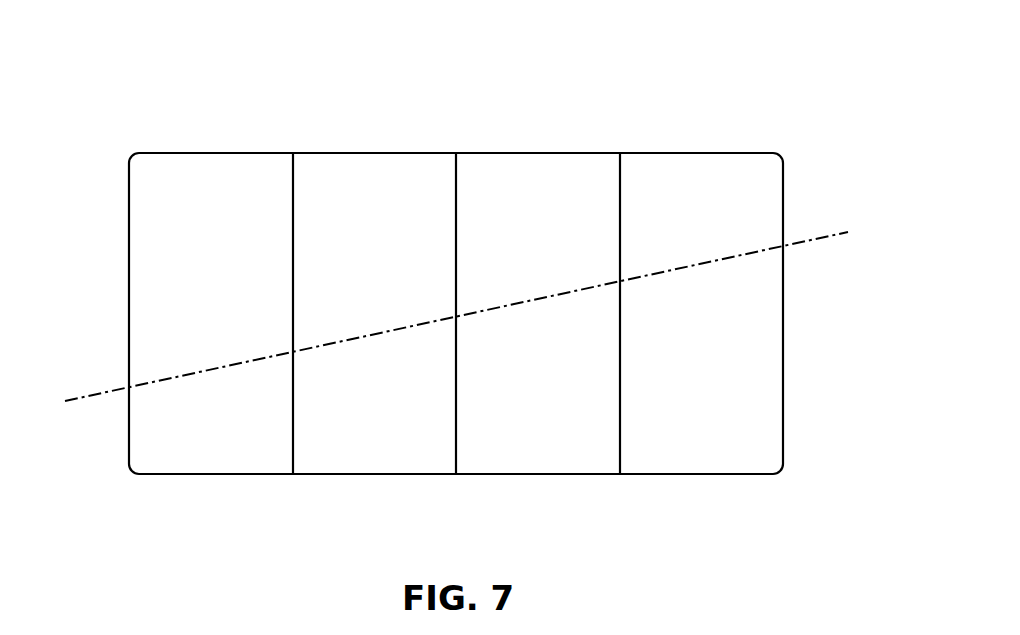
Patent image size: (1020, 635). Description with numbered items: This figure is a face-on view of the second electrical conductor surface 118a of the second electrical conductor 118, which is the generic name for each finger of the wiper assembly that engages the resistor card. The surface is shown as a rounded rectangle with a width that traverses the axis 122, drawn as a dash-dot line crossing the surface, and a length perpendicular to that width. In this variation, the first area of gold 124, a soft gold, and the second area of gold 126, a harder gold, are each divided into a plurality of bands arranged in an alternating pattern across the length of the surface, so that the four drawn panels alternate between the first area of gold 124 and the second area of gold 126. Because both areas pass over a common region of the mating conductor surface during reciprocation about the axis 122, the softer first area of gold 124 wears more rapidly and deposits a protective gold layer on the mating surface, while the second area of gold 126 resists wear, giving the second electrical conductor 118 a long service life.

The second electrical conductor 118 is at (431, 291).
The second electrical conductor surface 118a is at (122, 153).
The first area of gold 124 is at (204, 203).
The second area of gold 126 is at (371, 203).
The axis 122 is at (840, 232).